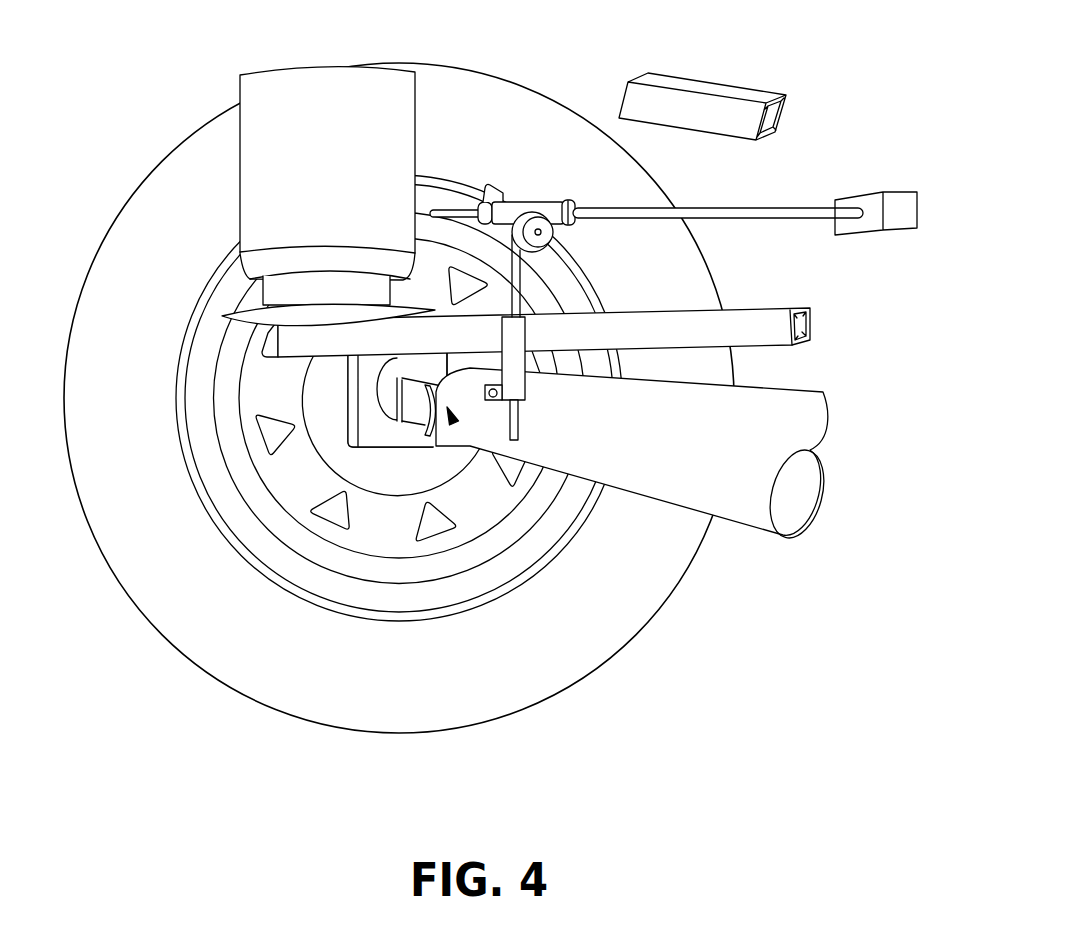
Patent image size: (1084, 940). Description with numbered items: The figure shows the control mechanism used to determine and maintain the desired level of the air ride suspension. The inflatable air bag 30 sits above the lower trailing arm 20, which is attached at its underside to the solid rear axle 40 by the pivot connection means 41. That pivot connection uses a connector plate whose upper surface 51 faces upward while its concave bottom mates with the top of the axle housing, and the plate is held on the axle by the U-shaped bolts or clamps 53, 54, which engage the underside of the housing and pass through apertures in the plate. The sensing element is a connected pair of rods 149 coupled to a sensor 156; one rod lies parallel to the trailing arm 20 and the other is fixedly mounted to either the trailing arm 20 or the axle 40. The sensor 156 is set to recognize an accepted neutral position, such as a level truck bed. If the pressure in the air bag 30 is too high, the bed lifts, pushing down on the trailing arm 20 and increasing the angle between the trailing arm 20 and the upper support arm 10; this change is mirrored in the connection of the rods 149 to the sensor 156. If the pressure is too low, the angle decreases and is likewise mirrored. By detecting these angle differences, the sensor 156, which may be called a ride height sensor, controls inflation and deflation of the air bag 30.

The upper support arm 10 is at (697, 118).
The lower trailing arm 20 is at (767, 333).
The inflatable air bag 30 is at (342, 157).
The solid rear axle 40 is at (772, 420).
The pivot connection means 41 is at (454, 422).
The upper surface of connector plate 51 is at (418, 375).
The U-shaped bolt or clamp 53 is at (435, 420).
The U-shaped bolt or clamp 54 is at (415, 418).
The connected pair of rods 149 is at (539, 185).
The sensor 156 is at (903, 207).